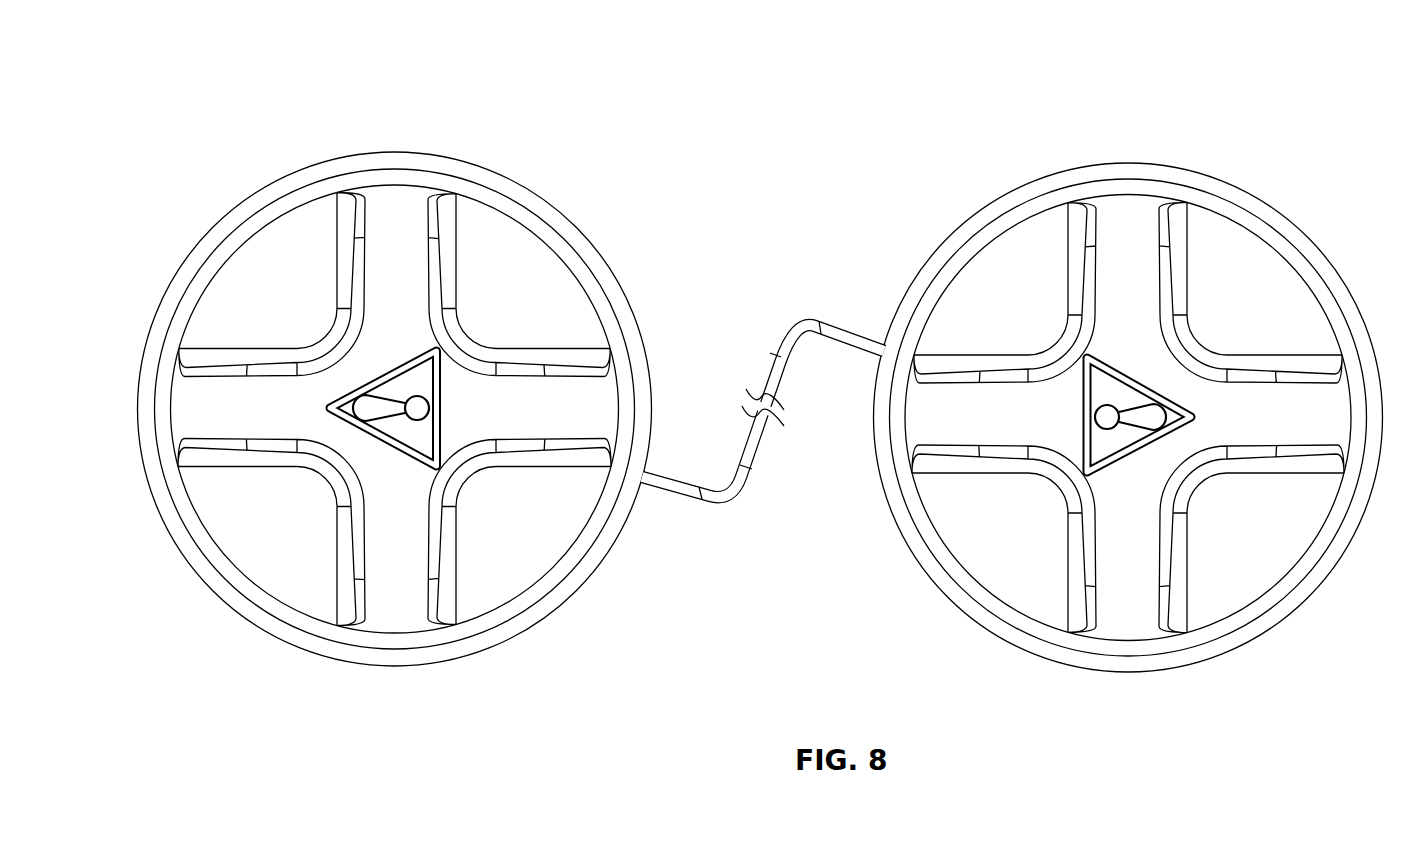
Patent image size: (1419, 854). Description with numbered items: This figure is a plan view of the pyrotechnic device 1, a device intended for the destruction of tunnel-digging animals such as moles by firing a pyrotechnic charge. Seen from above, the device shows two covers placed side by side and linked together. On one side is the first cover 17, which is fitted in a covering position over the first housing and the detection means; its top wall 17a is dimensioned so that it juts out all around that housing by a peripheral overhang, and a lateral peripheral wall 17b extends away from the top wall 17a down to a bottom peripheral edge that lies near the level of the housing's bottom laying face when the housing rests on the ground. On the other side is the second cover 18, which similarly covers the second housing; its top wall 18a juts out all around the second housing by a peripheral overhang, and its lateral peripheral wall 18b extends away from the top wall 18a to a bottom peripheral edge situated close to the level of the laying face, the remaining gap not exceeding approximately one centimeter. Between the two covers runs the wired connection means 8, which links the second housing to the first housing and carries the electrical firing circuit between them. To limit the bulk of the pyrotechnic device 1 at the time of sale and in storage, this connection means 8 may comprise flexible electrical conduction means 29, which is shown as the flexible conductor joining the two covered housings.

The pyrotechnic device 1 is at (733, 132).
The wired connection means 8 is at (753, 483).
The first cover 17 is at (985, 606).
The top wall 17a is at (1144, 342).
The lateral peripheral wall 17b is at (957, 226).
The second cover 18 is at (433, 644).
The top wall 18a is at (414, 316).
The lateral peripheral wall 18b is at (406, 160).
The flexible electrical conduction means 29 is at (782, 343).